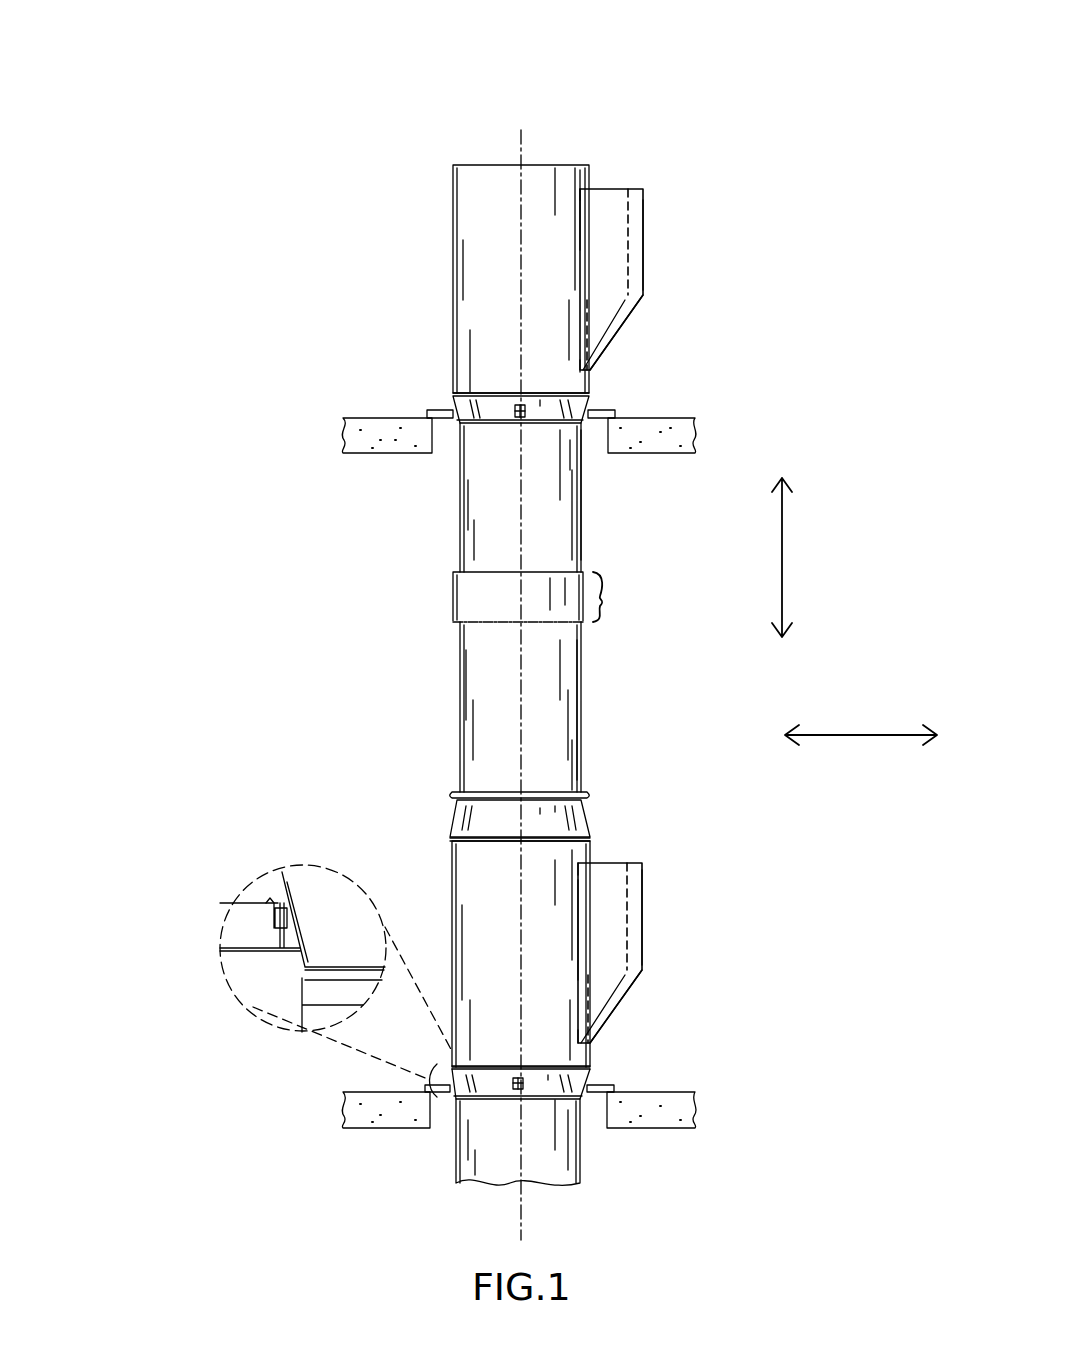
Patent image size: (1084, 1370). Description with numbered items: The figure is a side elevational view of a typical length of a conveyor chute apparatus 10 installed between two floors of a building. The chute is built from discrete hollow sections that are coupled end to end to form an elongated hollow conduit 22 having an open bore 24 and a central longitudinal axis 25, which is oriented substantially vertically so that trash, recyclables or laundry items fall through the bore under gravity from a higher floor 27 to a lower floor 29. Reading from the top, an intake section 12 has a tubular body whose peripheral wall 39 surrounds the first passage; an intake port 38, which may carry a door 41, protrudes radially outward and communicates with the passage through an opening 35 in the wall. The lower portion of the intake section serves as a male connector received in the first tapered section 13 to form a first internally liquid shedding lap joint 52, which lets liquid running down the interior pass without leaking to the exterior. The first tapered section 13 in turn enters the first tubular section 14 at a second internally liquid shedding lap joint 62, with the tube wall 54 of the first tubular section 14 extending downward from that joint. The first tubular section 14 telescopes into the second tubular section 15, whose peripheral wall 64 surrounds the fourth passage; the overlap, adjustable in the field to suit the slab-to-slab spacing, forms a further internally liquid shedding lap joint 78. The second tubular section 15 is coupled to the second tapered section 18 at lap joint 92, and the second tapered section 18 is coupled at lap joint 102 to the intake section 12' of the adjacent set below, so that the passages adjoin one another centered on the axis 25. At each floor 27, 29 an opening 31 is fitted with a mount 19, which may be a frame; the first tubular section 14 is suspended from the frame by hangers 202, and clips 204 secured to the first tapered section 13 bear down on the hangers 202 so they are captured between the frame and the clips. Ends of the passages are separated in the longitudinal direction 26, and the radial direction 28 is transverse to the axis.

The conveyor chute apparatus 10 is at (734, 26).
The intake section 12 is at (521, 279).
The intake section of adjacent set 12' is at (521, 954).
The first tapered section 13 is at (500, 427).
The first tubular section 14 is at (500, 523).
The second tubular section 15 is at (500, 693).
The second tapered section 18 is at (500, 837).
The mount 19 is at (440, 408).
The elongated hollow conduit 22 is at (425, 299).
The open bore 24 is at (485, 148).
The central longitudinal axis 25 is at (523, 136).
The longitudinal direction 26 is at (782, 547).
The higher floor 27 is at (357, 437).
The horizontal direction 28 is at (855, 738).
The lower floor 29 is at (373, 1108).
The opening 31 is at (440, 453).
The opening in wall 35 is at (600, 236).
The intake port 38 is at (643, 247).
The peripheral wall 39 is at (593, 177).
The door 41 is at (635, 278).
The first internally liquid shedding lap joint 52 is at (593, 1068).
The sleeve 54 is at (583, 538).
The second internally liquid shedding lap joint 62 is at (583, 432).
The peripheral wall 64 is at (587, 682).
The internally liquid shedding lap joint 78 is at (608, 596).
The internally liquid shedding lap joint 92 is at (582, 802).
The internally liquid shedding lap joint 102 is at (448, 836).
The hanger 202 is at (305, 977).
The clip 204 is at (275, 891).